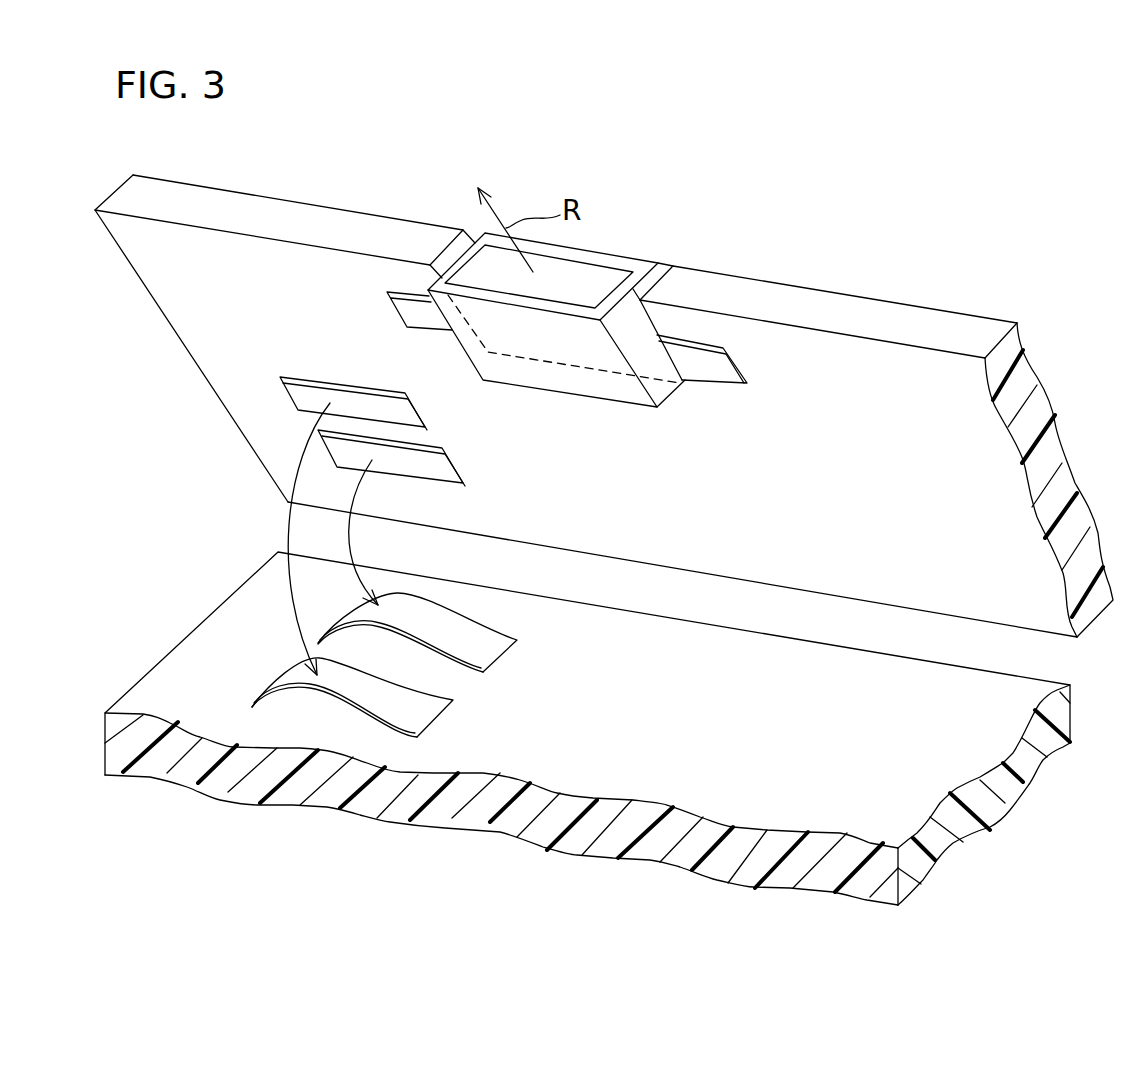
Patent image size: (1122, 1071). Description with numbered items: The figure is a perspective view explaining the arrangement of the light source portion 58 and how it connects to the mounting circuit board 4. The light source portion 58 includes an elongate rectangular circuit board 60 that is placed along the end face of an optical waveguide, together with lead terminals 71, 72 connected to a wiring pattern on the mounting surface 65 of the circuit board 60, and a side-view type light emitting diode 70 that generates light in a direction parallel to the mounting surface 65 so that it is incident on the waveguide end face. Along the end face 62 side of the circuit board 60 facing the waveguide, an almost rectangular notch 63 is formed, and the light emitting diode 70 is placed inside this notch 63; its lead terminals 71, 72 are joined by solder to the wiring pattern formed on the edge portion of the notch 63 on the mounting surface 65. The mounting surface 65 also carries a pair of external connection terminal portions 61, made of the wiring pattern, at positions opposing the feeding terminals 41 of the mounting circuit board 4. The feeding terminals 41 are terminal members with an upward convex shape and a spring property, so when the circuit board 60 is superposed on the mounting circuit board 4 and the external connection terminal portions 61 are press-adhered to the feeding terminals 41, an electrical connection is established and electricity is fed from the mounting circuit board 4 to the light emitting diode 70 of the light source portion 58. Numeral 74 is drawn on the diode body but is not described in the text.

The mounting circuit board 4 is at (987, 803).
The feeding terminals 41 is at (470, 645).
The light source portion 58 is at (882, 208).
The circuit board 60 is at (876, 322).
The external connection terminal portions 61 is at (385, 408).
The end face 62 is at (345, 238).
The notch 63 is at (640, 300).
The mounting surface 65 is at (840, 360).
The light emitting diode 70 is at (575, 287).
The lead terminal 71 is at (706, 372).
The lead terminal 72 is at (415, 313).
The component body 74 is at (658, 265).